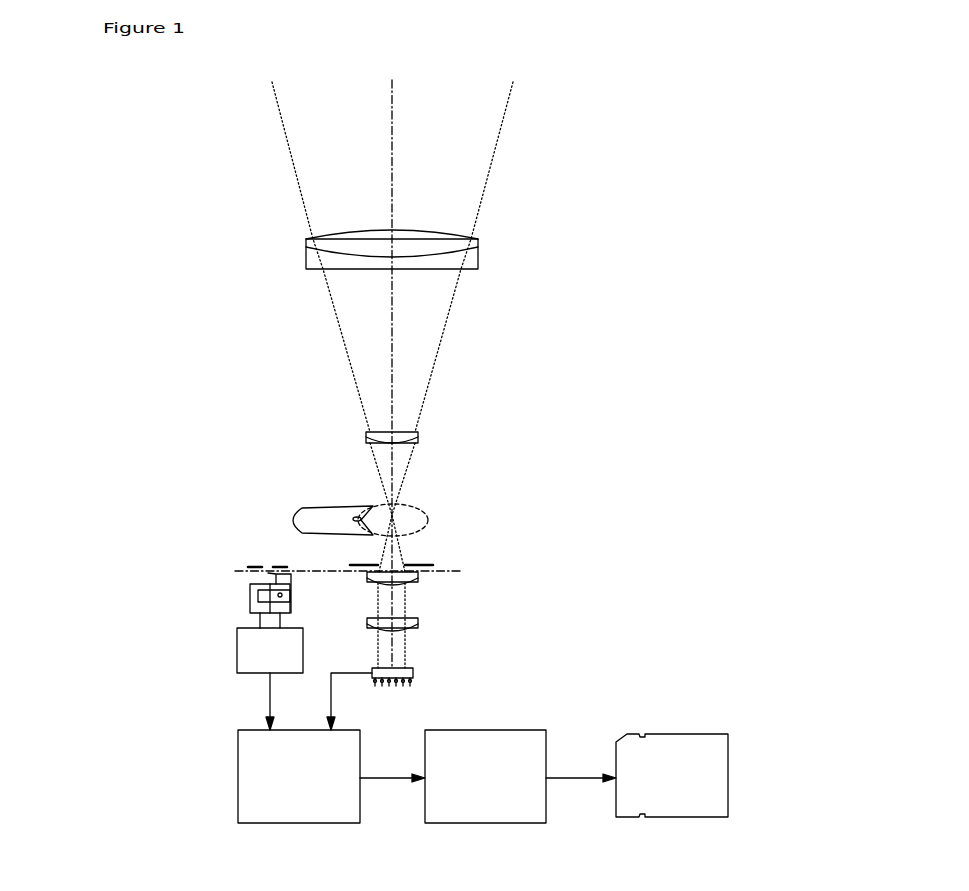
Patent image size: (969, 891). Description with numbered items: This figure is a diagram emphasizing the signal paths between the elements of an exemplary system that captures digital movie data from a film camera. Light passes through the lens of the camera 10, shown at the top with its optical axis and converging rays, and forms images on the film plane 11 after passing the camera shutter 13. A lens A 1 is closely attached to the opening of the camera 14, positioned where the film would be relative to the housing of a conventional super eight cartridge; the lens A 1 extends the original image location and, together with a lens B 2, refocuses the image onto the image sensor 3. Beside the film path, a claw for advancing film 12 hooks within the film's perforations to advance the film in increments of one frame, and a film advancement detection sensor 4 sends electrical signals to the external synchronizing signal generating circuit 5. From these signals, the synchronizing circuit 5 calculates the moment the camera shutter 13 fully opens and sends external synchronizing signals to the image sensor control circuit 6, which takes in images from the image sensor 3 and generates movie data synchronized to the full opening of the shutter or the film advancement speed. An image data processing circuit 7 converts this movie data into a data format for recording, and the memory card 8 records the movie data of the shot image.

The lens A 1 is at (413, 573).
The lens B 2 is at (415, 618).
The image sensor 3 is at (413, 668).
The film advancement detection sensor 4 is at (250, 598).
The external synchronizing signal generating circuit 5 is at (237, 655).
The image sensor control circuit 6 is at (253, 763).
The image data processing circuit 7 is at (498, 743).
The memory card 8 is at (662, 745).
The lens of the camera 10 is at (486, 242).
The film plane 11 is at (317, 570).
The claw for advancing film 12 is at (268, 574).
The camera shutter 13 is at (327, 515).
The opening of the camera 14 is at (405, 565).